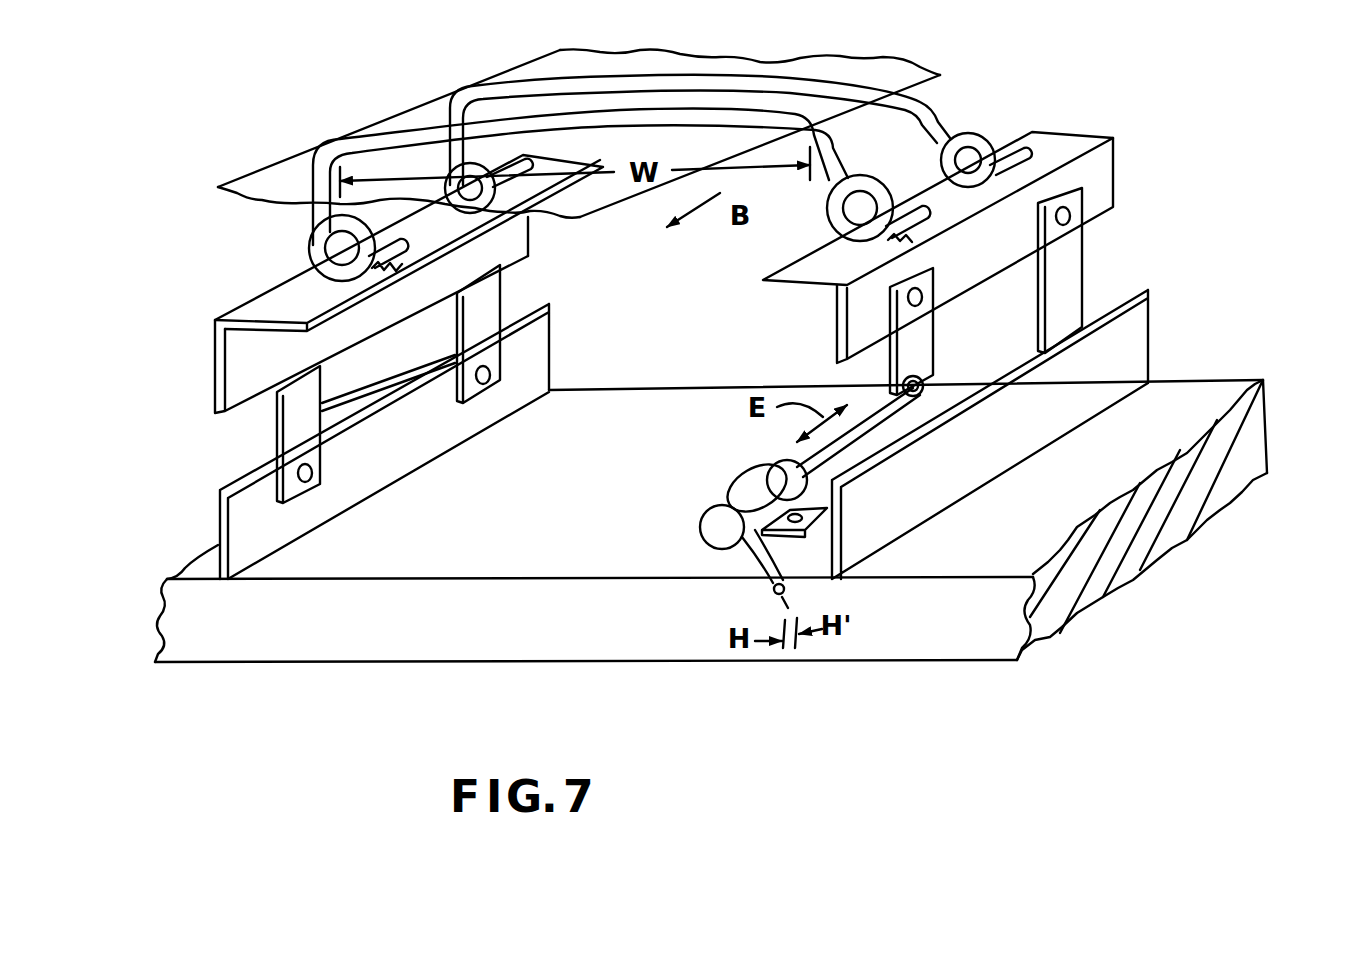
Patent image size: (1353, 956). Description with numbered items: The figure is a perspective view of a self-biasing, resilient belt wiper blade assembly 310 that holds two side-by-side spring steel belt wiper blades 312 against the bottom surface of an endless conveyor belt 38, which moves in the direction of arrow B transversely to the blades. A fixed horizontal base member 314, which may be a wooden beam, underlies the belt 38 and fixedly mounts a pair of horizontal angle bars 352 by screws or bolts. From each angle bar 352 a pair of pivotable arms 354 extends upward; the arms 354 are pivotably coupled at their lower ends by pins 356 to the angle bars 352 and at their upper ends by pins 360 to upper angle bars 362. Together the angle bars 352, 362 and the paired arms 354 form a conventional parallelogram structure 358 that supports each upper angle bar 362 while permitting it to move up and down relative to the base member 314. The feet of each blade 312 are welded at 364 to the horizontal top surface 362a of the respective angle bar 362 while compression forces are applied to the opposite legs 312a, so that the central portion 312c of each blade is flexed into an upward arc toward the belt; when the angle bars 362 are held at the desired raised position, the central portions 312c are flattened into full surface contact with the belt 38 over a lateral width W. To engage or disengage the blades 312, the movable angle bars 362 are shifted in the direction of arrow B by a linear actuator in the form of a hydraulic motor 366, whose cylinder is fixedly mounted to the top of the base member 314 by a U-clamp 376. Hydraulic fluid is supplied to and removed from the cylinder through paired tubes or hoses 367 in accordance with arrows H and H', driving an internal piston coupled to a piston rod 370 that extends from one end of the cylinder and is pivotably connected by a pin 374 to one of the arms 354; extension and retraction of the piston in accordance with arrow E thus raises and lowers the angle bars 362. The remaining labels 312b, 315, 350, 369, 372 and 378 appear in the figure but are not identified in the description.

The endless conveyor belt 38 is at (897, 70).
The self-biasing resilient belt wiper blade assembly 310 is at (1212, 188).
The resilient belt wiper blade 312 is at (747, 112).
The leg 312a is at (945, 128).
The strap lower portion 312b is at (1075, 188).
The central portion 312c is at (1000, 123).
The base member 314 is at (963, 645).
The base top surface 315 is at (645, 563).
The mounting assembly 350 is at (557, 323).
The horizontal angle bar 352 is at (550, 367).
The pivotable arm 354 is at (313, 413).
The pin 356 is at (313, 482).
The parallelogram structure 358 is at (530, 236).
The pin 360 is at (920, 300).
The angle bar 362 is at (297, 277).
The horizontal top surface 362a is at (268, 293).
The weld 364 is at (387, 262).
The hydraulic motor 366 is at (700, 535).
The tubes or hoses 367 is at (768, 590).
The cylinder end 369 is at (775, 462).
The piston rod 370 is at (875, 442).
The pivot 372 is at (930, 392).
The pin 374 is at (925, 398).
The U-clamp 376 is at (735, 475).
The mounting bracket 378 is at (820, 510).